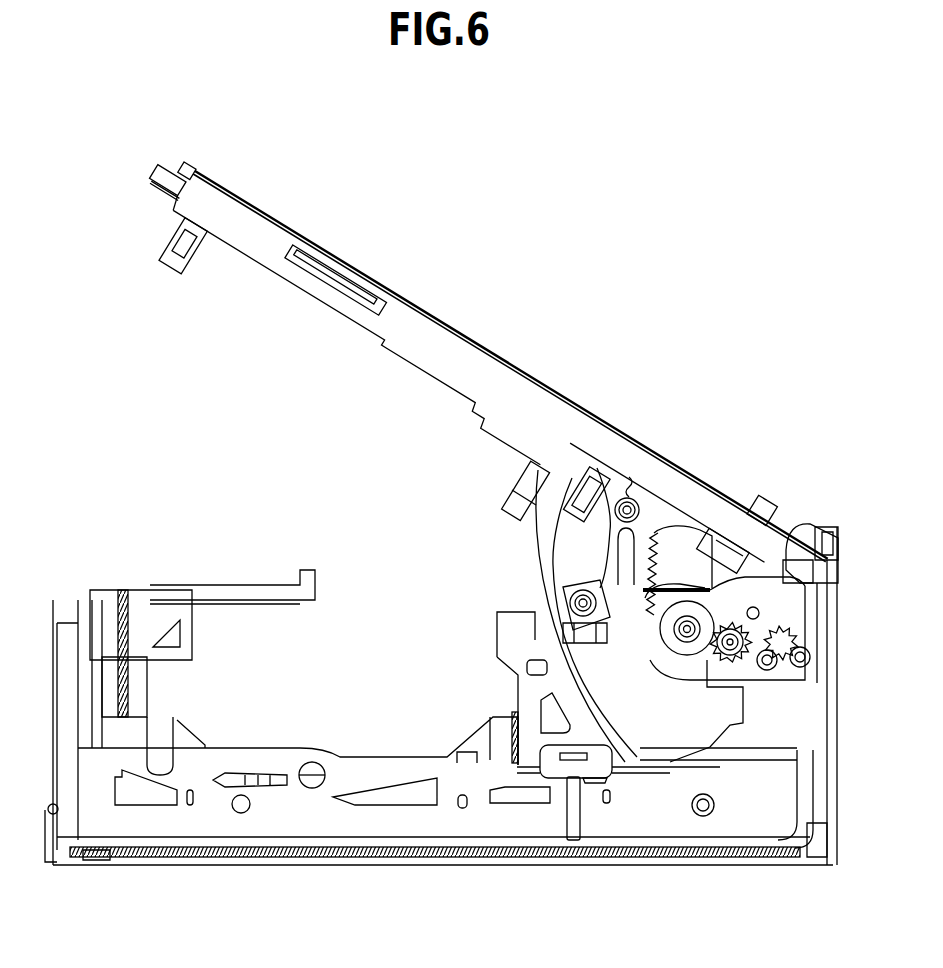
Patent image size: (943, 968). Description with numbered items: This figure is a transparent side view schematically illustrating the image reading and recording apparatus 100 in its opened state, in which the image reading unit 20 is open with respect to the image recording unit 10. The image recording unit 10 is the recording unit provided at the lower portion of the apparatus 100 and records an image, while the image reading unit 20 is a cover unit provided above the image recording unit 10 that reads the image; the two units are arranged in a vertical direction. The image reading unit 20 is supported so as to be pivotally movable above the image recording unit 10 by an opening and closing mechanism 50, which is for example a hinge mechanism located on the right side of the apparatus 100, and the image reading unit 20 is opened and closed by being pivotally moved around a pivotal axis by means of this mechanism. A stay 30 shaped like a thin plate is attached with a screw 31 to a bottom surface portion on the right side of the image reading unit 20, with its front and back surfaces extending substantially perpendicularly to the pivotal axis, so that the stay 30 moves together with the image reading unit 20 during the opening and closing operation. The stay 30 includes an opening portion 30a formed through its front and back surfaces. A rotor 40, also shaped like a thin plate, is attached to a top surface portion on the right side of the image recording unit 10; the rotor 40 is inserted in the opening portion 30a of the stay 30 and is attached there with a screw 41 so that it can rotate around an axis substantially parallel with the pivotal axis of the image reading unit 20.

The image reading and recording apparatus 100 is at (105, 181).
The image recording unit 10 is at (187, 818).
The image reading unit 20 is at (237, 214).
The stay 30 is at (572, 473).
The opening portion 30a is at (556, 572).
The screw 31 is at (628, 478).
The rotor 40 is at (600, 592).
The screw 41 is at (603, 462).
The opening and closing mechanism 50 is at (802, 547).